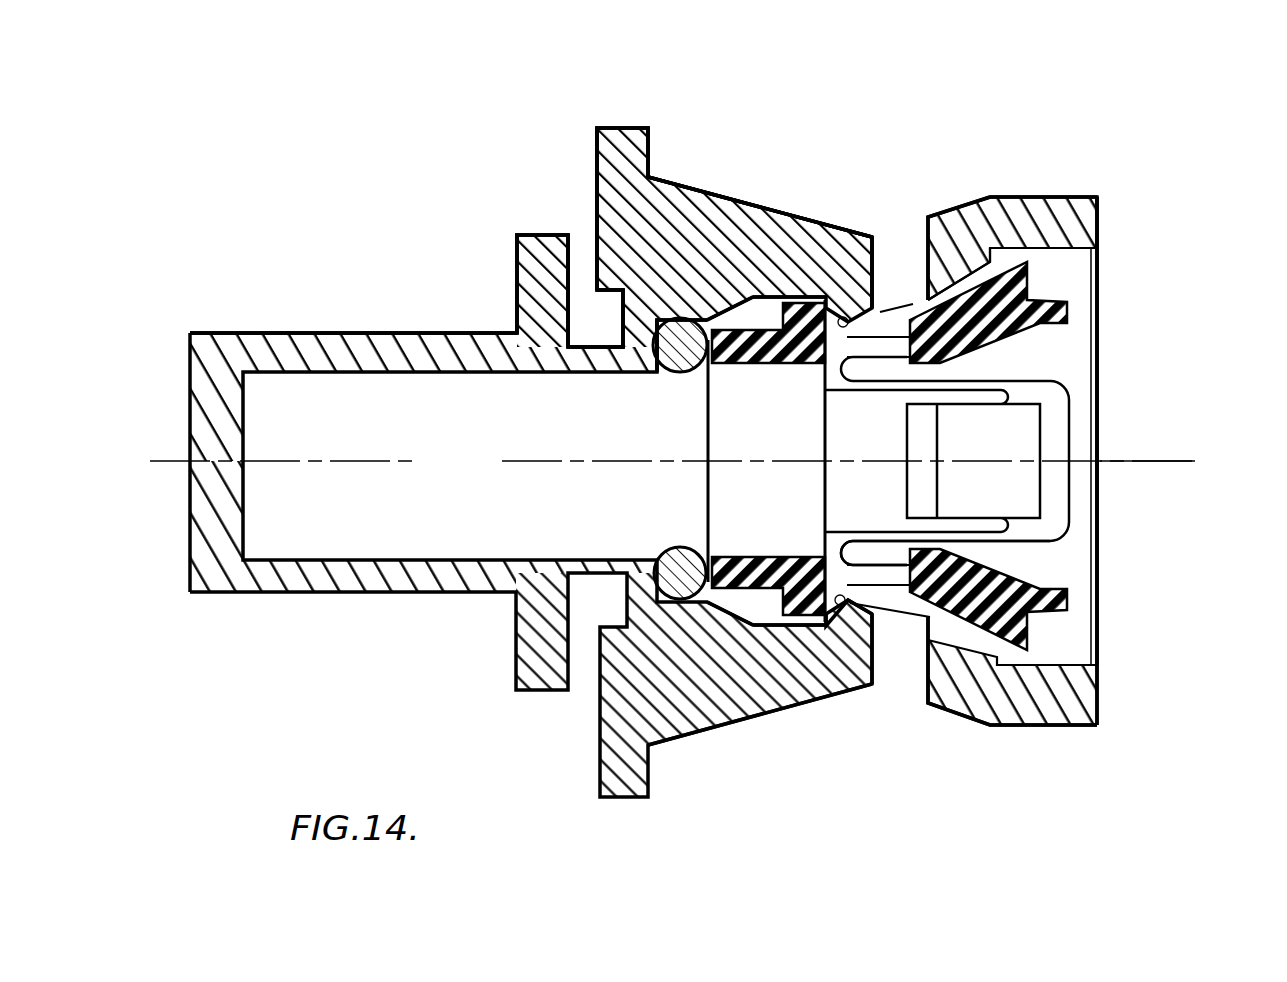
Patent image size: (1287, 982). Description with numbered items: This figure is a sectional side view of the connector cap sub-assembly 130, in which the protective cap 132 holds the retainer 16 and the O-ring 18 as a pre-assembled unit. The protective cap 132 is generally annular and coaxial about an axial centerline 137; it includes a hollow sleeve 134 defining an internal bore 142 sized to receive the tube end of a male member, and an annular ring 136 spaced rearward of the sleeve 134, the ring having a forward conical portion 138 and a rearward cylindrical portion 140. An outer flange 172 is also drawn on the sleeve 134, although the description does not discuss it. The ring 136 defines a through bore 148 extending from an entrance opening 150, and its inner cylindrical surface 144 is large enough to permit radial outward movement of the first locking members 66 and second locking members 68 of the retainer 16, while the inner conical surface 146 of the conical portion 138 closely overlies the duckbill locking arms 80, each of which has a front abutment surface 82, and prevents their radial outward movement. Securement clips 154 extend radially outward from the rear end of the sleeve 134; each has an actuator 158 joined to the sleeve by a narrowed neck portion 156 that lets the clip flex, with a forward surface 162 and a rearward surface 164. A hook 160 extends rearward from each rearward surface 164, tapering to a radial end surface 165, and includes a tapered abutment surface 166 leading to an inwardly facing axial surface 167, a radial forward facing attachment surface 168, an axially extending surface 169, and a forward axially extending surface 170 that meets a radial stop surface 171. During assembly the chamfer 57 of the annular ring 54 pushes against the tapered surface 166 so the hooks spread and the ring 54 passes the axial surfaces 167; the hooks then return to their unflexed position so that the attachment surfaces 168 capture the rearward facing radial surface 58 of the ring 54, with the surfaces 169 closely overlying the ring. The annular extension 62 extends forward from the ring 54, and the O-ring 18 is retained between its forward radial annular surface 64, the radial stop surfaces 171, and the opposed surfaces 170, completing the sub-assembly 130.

The connector cap sub-assembly 130 is at (808, 86).
The protective cap 132 is at (300, 333).
The hollow sleeve 134 is at (380, 330).
The flange 172 is at (517, 270).
The narrowed neck portion 156 is at (616, 345).
The actuator 158 is at (622, 128).
The forward surface 162 is at (597, 147).
The rearward surface 164 is at (650, 147).
The radial stop surface 171 is at (675, 316).
The forward axially extending surface 170 is at (717, 316).
The securement clip 154 is at (752, 197).
The hook 160 is at (773, 248).
The axially extending surface 169 is at (793, 297).
The inwardly facing axial surface 167 is at (872, 232).
The radial end surface 165 is at (848, 316).
The chamfer 57 is at (770, 645).
The attachment surface 168 is at (810, 640).
The tapered abutment surface 166 is at (870, 635).
The O-ring 18 is at (655, 388).
The annular ring 54 is at (790, 366).
The annular extension 62 is at (750, 372).
The forward radial annular surface 64 is at (692, 552).
The rearward facing radial surface 58 is at (835, 345).
The first locking member 66 is at (1050, 447).
The front abutment surface 82 is at (882, 548).
The locking arm 80 is at (920, 300).
The inner conical surface 146 is at (930, 312).
The annular ring 136 is at (1037, 197).
The rearward cylindrical portion 140 is at (1020, 197).
The forward conical portion 138 is at (965, 250).
The retainer 16 is at (953, 250).
The second locking member 68 is at (1010, 250).
The entrance opening 150 is at (1100, 262).
The through bore 148 is at (1072, 283).
The inner cylindrical surface 144 is at (1050, 666).
The internal bore 142 is at (500, 471).
The axial centerline 137 is at (1180, 440).